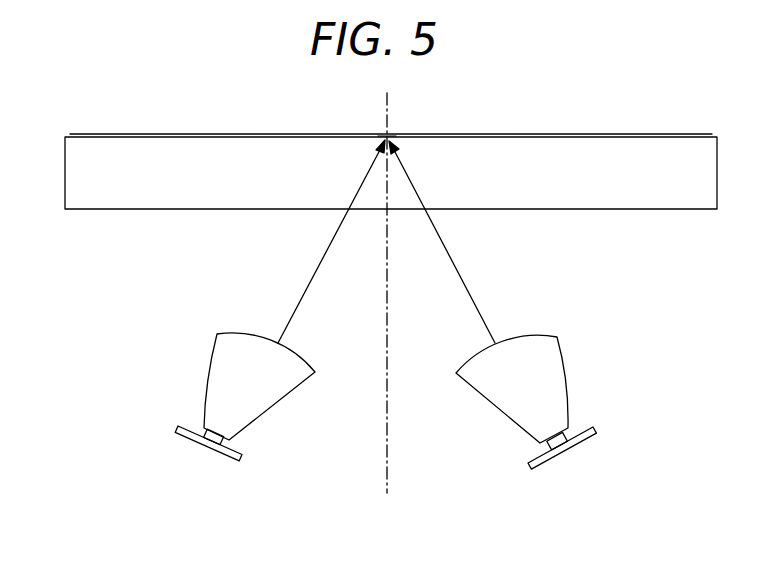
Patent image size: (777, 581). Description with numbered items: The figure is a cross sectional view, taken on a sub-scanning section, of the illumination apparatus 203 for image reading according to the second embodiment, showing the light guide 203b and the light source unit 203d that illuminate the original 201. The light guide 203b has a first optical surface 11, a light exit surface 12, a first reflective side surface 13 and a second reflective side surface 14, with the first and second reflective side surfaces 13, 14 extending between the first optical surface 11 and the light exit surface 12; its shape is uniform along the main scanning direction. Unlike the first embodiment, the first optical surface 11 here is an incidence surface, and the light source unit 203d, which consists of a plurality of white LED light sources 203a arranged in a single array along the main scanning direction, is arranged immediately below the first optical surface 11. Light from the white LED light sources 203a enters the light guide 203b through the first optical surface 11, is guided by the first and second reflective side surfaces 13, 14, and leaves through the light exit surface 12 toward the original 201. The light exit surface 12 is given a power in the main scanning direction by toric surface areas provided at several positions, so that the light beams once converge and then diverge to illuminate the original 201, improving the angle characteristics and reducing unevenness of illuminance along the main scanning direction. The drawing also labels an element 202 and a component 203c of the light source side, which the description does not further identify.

The first optical surface 11 is at (227, 447).
The light exit surface 12 is at (279, 353).
The first reflective side surface 13 is at (279, 353).
The second reflective side surface 14 is at (246, 353).
The original 201 is at (388, 132).
The original (platen glass) 202 is at (552, 152).
The illumination apparatus 203 is at (193, 394).
The white LED light sources 203a is at (221, 353).
The light guide 203b is at (236, 343).
The substrate 203c is at (164, 438).
The light source unit 203d is at (192, 364).